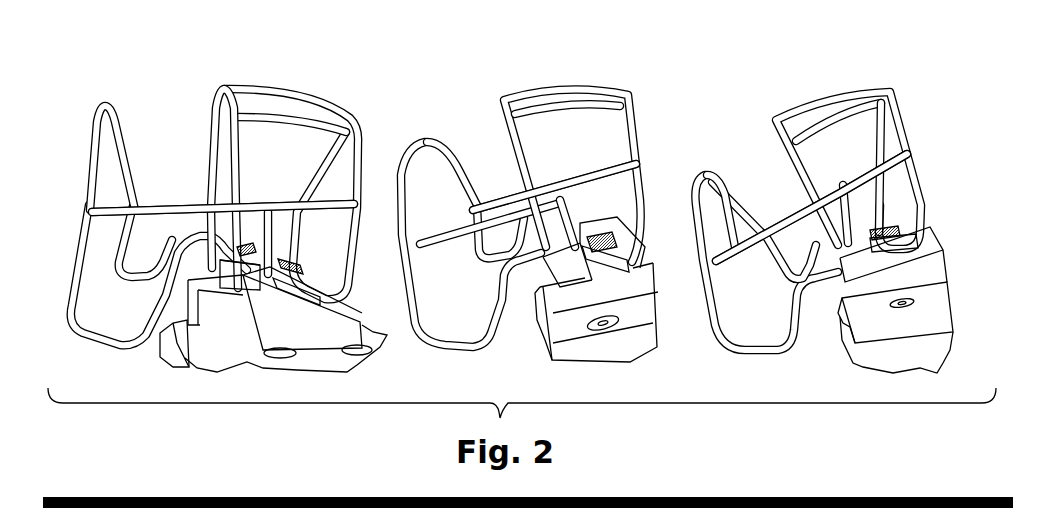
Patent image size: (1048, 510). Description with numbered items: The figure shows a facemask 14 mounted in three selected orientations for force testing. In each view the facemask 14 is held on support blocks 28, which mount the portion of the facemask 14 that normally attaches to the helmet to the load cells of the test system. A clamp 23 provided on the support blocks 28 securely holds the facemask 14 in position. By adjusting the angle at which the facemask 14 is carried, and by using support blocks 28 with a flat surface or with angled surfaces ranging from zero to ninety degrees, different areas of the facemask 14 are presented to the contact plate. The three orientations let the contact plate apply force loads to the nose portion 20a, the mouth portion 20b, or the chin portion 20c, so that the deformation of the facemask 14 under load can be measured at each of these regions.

The facemask 14 is at (163, 205).
The nose portion 20a is at (221, 76).
The mouth portion 20b is at (561, 74).
The chin portion 20c is at (853, 212).
The clamp 23 is at (925, 222).
The support blocks 28 is at (925, 274).